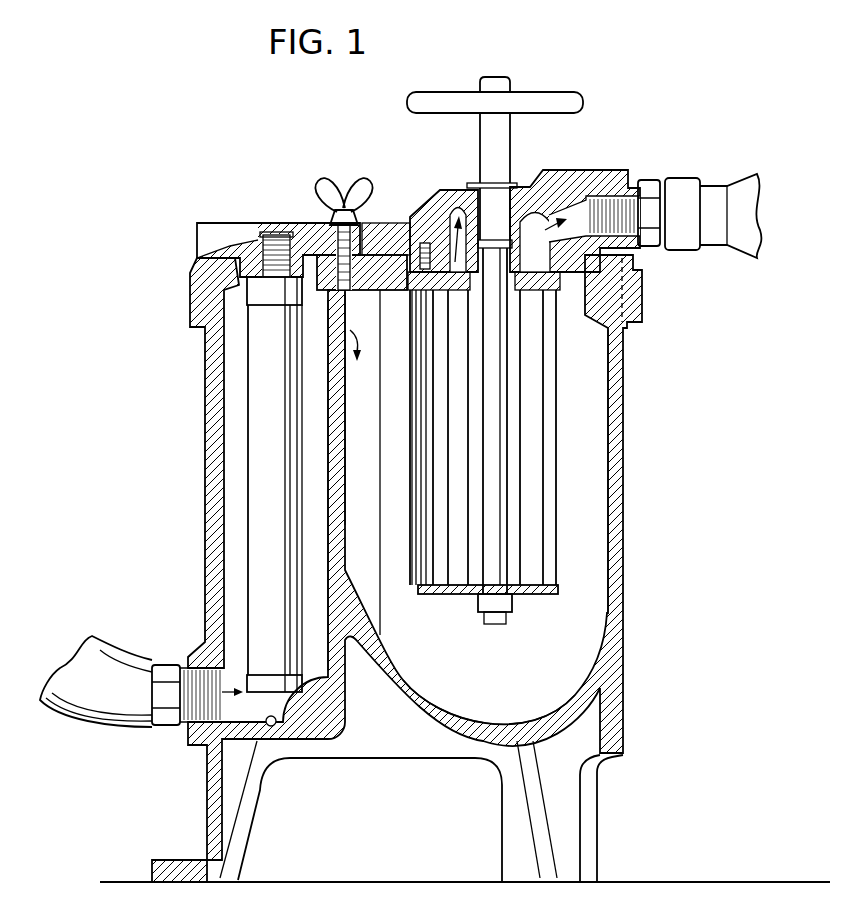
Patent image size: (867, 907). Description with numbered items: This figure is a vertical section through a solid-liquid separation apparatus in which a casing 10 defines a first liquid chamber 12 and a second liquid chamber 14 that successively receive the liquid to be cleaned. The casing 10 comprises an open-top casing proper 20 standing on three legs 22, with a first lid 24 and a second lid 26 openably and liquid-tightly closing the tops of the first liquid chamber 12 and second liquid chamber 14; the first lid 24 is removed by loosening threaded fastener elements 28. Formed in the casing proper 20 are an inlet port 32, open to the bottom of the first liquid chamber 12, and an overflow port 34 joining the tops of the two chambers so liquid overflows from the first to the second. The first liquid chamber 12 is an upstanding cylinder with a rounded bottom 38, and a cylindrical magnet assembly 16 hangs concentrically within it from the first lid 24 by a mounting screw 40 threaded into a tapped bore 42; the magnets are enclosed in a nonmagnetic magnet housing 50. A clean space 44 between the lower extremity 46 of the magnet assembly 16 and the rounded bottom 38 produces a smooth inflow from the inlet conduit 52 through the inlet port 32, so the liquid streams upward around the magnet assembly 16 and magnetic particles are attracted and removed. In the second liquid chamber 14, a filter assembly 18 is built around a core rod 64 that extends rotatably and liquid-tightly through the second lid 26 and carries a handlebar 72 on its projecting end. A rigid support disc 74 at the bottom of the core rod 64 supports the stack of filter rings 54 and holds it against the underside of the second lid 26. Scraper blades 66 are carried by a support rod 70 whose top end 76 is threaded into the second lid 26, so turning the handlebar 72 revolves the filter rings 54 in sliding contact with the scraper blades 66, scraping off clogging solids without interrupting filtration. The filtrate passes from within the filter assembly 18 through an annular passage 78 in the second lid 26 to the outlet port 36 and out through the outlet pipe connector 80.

The casing 10 is at (435, 455).
The first liquid chamber 12 is at (223, 497).
The second liquid chamber 14 is at (582, 432).
The magnet assembly 16 is at (246, 399).
The filter assembly 18 is at (559, 388).
The casing proper 20 is at (207, 352).
The legs 22 is at (207, 805).
The first lid 24 is at (214, 224).
The second lid 26 is at (397, 221).
The threaded fastener elements 28 is at (335, 208).
The inlet port 32 is at (192, 740).
The overflow port 34 is at (336, 303).
The outlet port 36 is at (592, 196).
The rounded bottom 38 is at (276, 728).
The mounting screw 40 is at (270, 237).
The tapped bore 42 is at (290, 232).
The clean space 44 is at (307, 697).
The lower extremity 46 is at (314, 726).
The magnet housing 50 is at (255, 447).
The inlet conduit 52 is at (102, 705).
The filter rings 54 is at (540, 580).
The core rod 64 is at (493, 628).
The scraper blades 66 is at (415, 592).
The support rod 70 is at (422, 596).
The handlebar 72 is at (554, 95).
The support disc 74 is at (525, 600).
The top end 76 is at (427, 243).
The annular passage 78 is at (533, 196).
The outlet pipe connector 80 is at (680, 186).